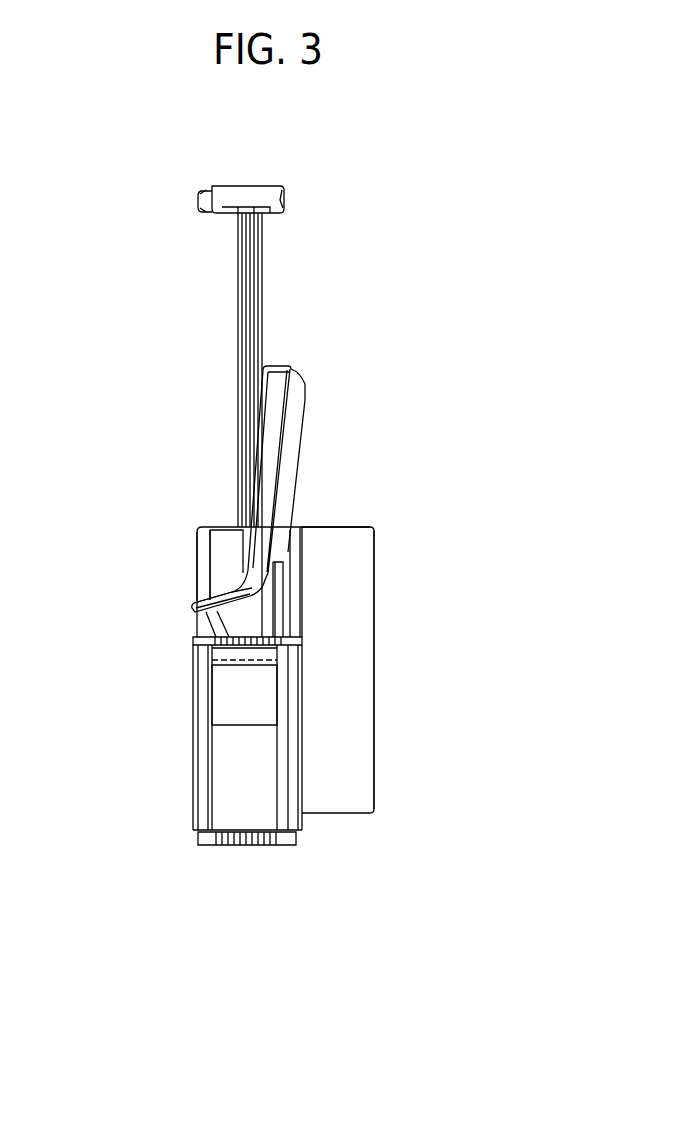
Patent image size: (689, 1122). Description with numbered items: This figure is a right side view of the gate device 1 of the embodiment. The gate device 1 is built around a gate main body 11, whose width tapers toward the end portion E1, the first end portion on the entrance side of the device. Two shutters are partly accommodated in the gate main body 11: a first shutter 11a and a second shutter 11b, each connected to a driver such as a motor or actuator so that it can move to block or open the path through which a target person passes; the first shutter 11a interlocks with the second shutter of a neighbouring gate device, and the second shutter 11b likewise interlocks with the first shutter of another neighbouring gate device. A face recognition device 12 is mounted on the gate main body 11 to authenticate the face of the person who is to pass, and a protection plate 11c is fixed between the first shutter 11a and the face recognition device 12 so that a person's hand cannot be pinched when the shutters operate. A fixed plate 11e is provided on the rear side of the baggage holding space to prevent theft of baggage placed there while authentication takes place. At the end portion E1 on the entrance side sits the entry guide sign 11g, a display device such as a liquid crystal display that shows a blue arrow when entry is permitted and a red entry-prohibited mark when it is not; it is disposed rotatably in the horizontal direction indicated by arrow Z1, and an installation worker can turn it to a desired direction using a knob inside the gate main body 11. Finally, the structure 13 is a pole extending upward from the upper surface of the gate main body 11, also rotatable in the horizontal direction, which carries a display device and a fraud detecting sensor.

The gate device 1 is at (417, 174).
The gate main body 11 is at (181, 820).
The first shutter 11a is at (196, 527).
The second shutter 11b is at (375, 532).
The protection plate 11c is at (347, 527).
The fixed plate 11e is at (280, 620).
The entry guide sign 11g is at (218, 692).
The face recognition device 12 is at (310, 388).
The structure 13 is at (272, 268).
The arrow Z1 direction Z1 is at (277, 739).
The end portion E1 is at (258, 808).